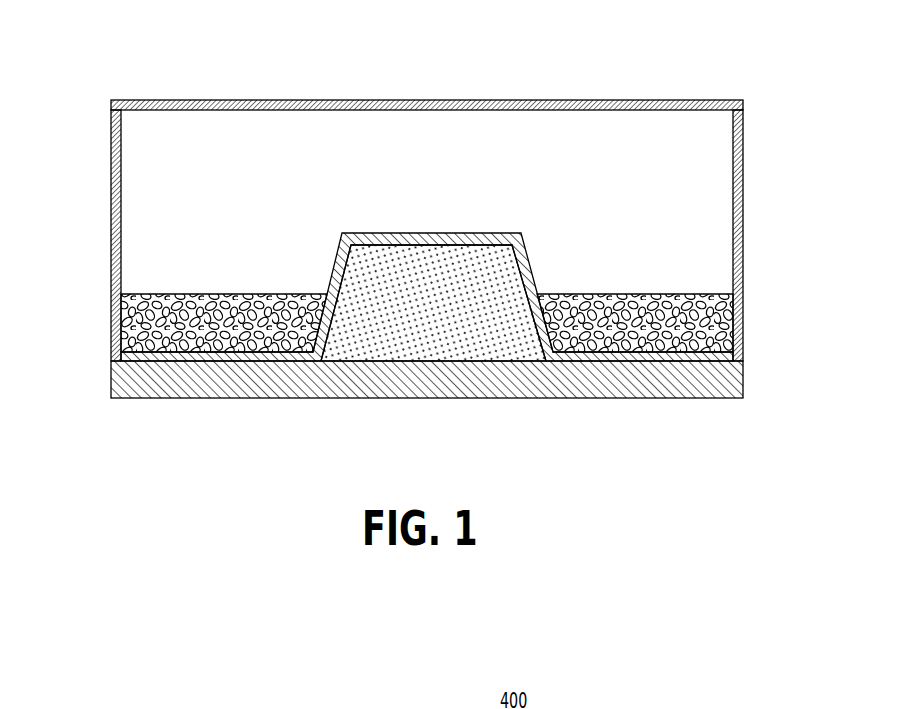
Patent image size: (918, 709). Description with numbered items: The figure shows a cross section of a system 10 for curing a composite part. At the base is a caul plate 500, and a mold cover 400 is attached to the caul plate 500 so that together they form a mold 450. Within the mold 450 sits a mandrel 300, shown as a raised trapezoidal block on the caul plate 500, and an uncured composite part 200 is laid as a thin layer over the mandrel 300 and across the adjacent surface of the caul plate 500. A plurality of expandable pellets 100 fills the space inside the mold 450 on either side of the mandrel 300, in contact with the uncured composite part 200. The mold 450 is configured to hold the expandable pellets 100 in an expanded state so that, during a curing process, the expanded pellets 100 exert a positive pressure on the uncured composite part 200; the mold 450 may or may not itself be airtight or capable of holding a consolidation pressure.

The system 10 is at (770, 138).
The expandable pellets 100 is at (742, 339).
The uncured composite part 200 is at (331, 320).
The mandrel 300 is at (415, 320).
The mold cover 400 is at (502, 100).
The mold 450 is at (87, 252).
The caul plate 500 is at (605, 378).